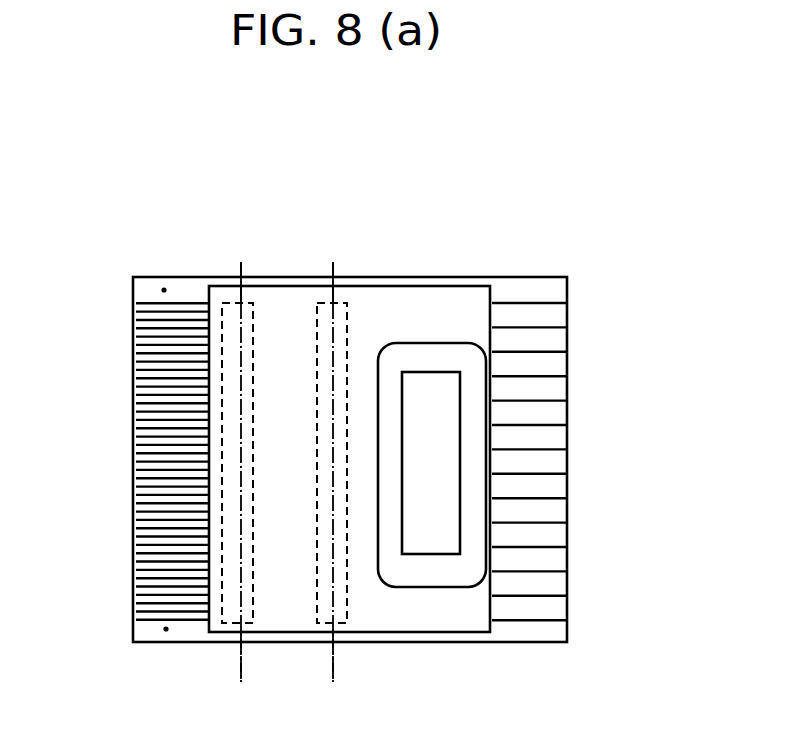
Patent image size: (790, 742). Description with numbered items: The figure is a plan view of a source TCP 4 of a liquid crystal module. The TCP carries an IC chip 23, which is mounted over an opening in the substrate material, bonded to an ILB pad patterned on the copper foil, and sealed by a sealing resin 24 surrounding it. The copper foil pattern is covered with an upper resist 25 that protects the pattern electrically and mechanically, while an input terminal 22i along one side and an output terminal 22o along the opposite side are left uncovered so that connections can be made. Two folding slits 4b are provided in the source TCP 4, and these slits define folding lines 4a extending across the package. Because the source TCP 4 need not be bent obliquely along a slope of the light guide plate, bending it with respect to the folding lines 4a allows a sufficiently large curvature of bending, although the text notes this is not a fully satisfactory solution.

The source TCP 4 is at (498, 177).
The folding lines 4a is at (241, 263).
The folding slits 4b is at (268, 648).
The output terminal 22o is at (146, 456).
The input terminal 22i is at (553, 284).
The IC chip 23 is at (453, 453).
The sealing resin 24 is at (470, 572).
The upper resist 25 is at (215, 630).